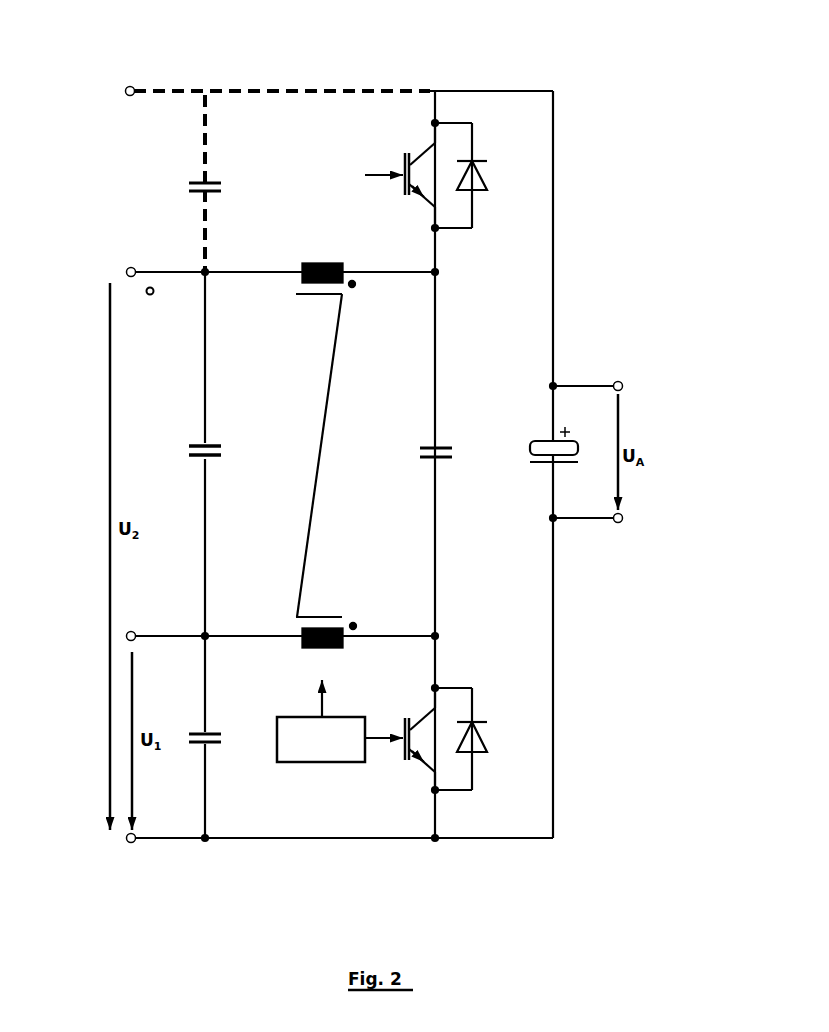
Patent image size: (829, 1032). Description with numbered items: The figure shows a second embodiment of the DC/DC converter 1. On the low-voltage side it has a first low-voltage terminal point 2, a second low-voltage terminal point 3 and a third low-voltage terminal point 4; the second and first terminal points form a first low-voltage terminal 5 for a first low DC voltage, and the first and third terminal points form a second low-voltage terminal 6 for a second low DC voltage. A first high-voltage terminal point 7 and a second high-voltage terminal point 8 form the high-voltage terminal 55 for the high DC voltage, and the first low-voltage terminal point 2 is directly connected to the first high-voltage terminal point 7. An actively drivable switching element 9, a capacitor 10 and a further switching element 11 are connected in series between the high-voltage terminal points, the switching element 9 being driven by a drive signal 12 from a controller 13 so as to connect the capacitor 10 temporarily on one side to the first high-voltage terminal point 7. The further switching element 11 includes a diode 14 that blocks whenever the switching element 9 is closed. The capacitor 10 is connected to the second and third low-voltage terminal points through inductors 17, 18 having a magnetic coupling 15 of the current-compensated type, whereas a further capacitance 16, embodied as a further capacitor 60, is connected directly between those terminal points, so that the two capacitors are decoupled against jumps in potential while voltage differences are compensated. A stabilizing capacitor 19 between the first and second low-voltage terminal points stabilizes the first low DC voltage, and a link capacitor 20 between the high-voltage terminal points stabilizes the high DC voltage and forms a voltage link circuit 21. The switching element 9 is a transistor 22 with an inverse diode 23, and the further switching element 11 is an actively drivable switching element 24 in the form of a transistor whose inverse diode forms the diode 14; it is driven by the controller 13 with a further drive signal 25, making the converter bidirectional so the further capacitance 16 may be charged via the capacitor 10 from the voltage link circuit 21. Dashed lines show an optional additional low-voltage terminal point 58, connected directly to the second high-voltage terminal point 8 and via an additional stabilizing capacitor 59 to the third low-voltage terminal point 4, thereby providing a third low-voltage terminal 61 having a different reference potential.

The DC/DC converter 1 is at (308, 162).
The first low-voltage terminal point 2 is at (127, 845).
The second low-voltage terminal point 3 is at (137, 631).
The third low-voltage terminal point 4 is at (125, 270).
The first low-voltage terminal 5 is at (114, 828).
The second low-voltage terminal 6 is at (125, 832).
The first high-voltage terminal point 7 is at (622, 524).
The second high-voltage terminal point 8 is at (621, 380).
The actively drivable switching element 9 is at (398, 775).
The capacitor 10 is at (441, 444).
The further switching element 11 is at (396, 204).
The drive signal 12 is at (378, 733).
The controller 13 is at (298, 766).
The diode 14 is at (490, 175).
The magnetic coupling 15 is at (312, 250).
The further capacitance 16 is at (212, 442).
The inductor 17 is at (316, 652).
The inductor 18 is at (328, 265).
The stabilizing capacitor 19 is at (212, 730).
The link capacitor 20 is at (537, 437).
The voltage link circuit 21 is at (540, 513).
The transistor 22 is at (420, 708).
The inverse diode 23 is at (490, 737).
The actively drivable switching element 24 is at (414, 135).
The further drive signal 25 is at (378, 172).
The high-voltage terminal 55 is at (625, 392).
The additional low-voltage terminal point 58 is at (130, 85).
The additional stabilizing capacitor 59 is at (200, 178).
The further capacitor 60 is at (212, 442).
The third low-voltage terminal 61 is at (125, 268).